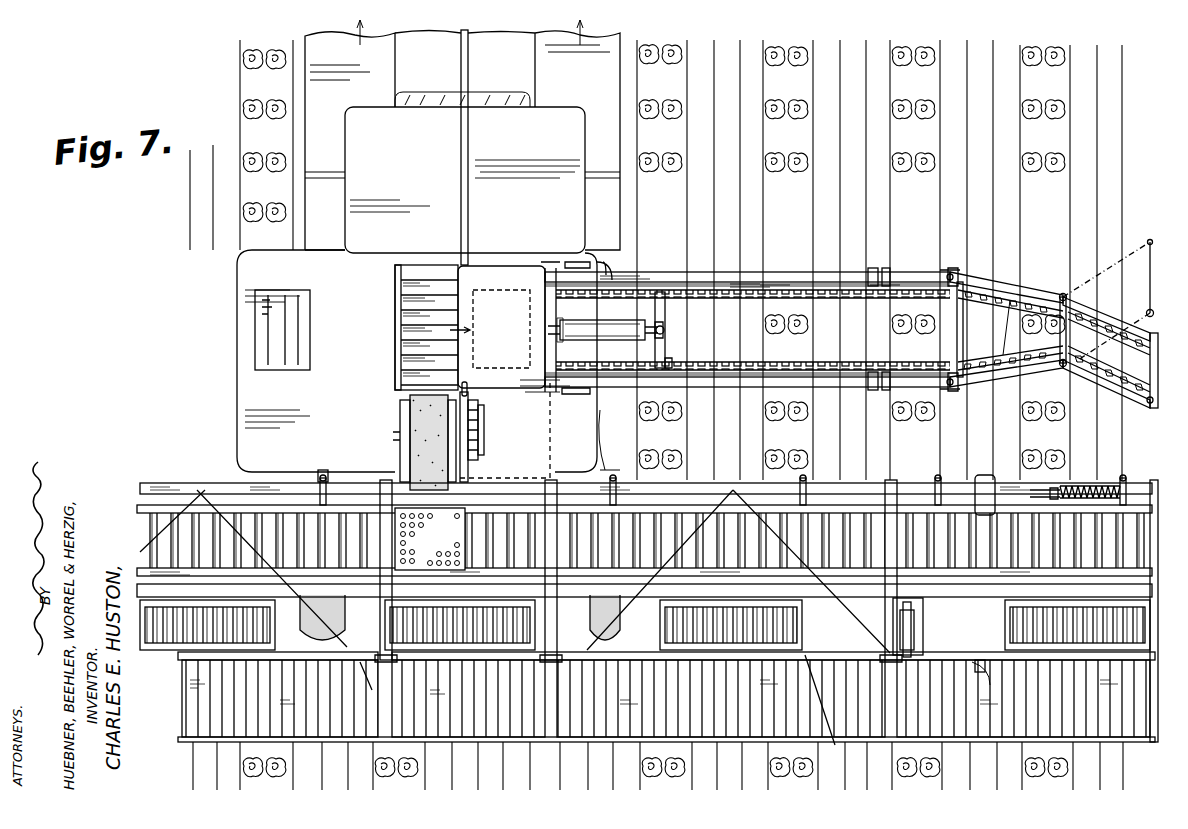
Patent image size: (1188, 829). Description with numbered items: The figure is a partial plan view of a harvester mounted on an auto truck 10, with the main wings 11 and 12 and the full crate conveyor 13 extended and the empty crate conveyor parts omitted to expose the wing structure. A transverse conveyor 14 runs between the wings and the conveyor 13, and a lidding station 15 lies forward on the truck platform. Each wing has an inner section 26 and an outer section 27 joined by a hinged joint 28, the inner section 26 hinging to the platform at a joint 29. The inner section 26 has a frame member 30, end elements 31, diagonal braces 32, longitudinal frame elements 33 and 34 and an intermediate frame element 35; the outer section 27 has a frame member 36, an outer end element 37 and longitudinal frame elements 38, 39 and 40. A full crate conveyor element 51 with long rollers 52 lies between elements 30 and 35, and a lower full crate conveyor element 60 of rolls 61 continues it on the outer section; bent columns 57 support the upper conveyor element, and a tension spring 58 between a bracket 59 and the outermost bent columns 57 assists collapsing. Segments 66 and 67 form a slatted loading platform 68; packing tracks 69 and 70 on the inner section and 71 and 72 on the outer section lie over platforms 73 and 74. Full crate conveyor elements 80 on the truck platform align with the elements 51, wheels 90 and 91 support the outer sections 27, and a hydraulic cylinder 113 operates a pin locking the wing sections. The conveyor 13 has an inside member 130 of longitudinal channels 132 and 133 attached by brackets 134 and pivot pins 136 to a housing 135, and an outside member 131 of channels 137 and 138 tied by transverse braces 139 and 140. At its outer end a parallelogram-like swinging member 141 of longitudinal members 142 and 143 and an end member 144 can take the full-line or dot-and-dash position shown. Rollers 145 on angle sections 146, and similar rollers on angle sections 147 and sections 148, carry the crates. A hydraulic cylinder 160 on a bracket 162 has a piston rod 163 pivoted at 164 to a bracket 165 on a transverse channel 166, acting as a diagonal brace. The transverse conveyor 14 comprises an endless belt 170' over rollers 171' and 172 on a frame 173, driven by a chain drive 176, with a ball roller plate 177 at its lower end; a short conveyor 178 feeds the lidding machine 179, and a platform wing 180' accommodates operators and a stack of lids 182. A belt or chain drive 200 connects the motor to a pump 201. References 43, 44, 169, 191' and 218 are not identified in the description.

The auto truck 10 is at (297, 127).
The main wing 11 is at (969, 752).
The main wing 12 is at (208, 752).
The full crate conveyor 13 is at (857, 266).
The transverse conveyor 14 is at (394, 425).
The lidding station 15 is at (545, 254).
The inner section 26 is at (326, 753).
The outer section 27 is at (1156, 752).
The hinged joint 28 is at (906, 654).
The hinged joint 29 is at (383, 662).
The frame member 30 is at (365, 575).
The end elements 31 is at (345, 612).
The diagonal braces 32 is at (142, 525).
The longitudinal frame element 33 is at (360, 660).
The longitudinal frame element 34 is at (160, 470).
The intermediate frame element 35 is at (140, 507).
The frame member 36 is at (1152, 574).
The outer end element 37 is at (1152, 606).
The longitudinal frame element 38 is at (1135, 660).
The longitudinal frame element 39 is at (1135, 484).
The longitudinal frame element 40 is at (1147, 505).
The guide 43 is at (615, 463).
The support 44 is at (822, 505).
The full crate conveyor element 51 is at (182, 497).
The long rollers 52 is at (260, 520).
The bent columns 57 is at (940, 482).
The tension spring 58 is at (1100, 488).
The bracket 59 is at (1058, 490).
The lower full crate conveyor element 60 is at (1017, 499).
The rolls 61 is at (1120, 535).
The loading platform segment 66 is at (325, 730).
The loading platform segment 67 is at (1008, 730).
The loading platform 68 is at (884, 753).
The packing track 69 is at (280, 592).
The packing track 70 is at (625, 640).
The packing track 71 is at (940, 592).
The packing track 72 is at (925, 655).
The platform 73 is at (165, 653).
The platform 74 is at (1132, 637).
The full crate conveyor elements 80 is at (473, 753).
The wheel 90 is at (988, 478).
The wheel 91 is at (990, 690).
The hydraulic cylinder 113 is at (890, 482).
The inside member 130 is at (611, 258).
The outside member 131 is at (1007, 268).
The longitudinal channel 132 is at (742, 278).
The longitudinal channel 133 is at (748, 378).
The brackets 134 is at (578, 262).
The housing 135 is at (543, 385).
The pivot pins 136 is at (553, 392).
The longitudinal channel 137 is at (948, 268).
The longitudinal channel 138 is at (988, 376).
The transverse brace 139 is at (980, 323).
The transverse brace 140 is at (1060, 346).
The swinging member 141 is at (1151, 233).
The longitudinal member 142 is at (1118, 308).
The longitudinal member 143 is at (1102, 385).
The end member 144 is at (1138, 370).
The rollers 145 is at (752, 366).
The angle sections 146 is at (840, 285).
The angle sections 147 is at (1015, 308).
The sections 148 is at (1153, 315).
The hydraulic cylinder 160 is at (588, 312).
The bracket 162 is at (568, 340).
The piston rod 163 is at (655, 338).
The pivot 164 is at (665, 305).
The bracket 165 is at (670, 328).
The transverse channel 166 is at (666, 352).
The hinge 169 is at (955, 268).
The endless belt 170' is at (403, 442).
The roller 171' is at (406, 425).
The roller 172 is at (400, 486).
The frame 173 is at (395, 436).
The chain drive 176 is at (470, 388).
The ball roller plate 177 is at (430, 539).
The short conveyor 178 is at (389, 326).
The lidding machine 179 is at (506, 262).
The platform wing 180' is at (373, 361).
The stack of lids 182 is at (244, 346).
The guide 191' is at (616, 431).
The belt or chain drive 200 is at (480, 425).
The pump 201 is at (484, 452).
The bottom plate 218 is at (521, 483).